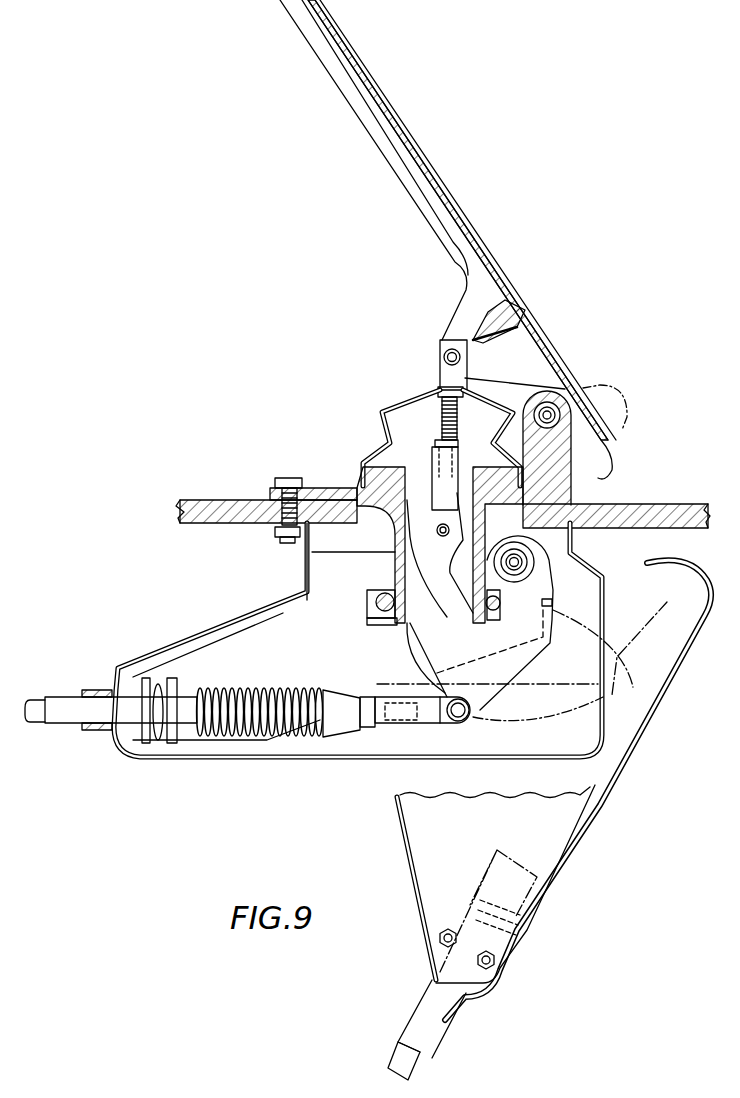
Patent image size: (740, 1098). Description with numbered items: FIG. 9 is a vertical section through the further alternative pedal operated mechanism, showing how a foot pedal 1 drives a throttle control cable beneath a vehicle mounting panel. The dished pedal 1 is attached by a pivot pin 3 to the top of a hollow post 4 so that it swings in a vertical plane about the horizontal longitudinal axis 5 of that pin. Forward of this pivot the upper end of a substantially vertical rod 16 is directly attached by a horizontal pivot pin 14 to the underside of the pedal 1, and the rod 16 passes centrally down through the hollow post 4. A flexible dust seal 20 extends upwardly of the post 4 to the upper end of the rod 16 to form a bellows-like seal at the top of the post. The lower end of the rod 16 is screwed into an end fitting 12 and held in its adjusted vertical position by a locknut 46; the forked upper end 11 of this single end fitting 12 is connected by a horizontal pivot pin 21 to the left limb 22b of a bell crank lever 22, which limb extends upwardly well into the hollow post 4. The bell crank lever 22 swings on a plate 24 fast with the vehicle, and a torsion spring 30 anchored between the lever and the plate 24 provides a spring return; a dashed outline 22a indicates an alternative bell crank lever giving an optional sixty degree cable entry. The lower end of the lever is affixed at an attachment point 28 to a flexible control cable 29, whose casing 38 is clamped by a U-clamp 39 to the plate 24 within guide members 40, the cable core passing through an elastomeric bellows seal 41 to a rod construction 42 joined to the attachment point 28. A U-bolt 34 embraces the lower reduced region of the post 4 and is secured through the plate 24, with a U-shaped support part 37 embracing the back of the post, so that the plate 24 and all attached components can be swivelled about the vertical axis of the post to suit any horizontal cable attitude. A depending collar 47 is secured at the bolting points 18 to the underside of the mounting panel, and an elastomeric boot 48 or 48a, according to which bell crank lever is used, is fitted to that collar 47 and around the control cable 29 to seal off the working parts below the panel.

The pedal 1 is at (453, 210).
The pivot pin 3 is at (577, 363).
The hollow post 4 is at (397, 533).
The horizontal longitudinal axis 5 is at (567, 423).
The forked upper end 11 is at (491, 545).
The end fitting 12 is at (458, 480).
The horizontal pivot pin 14 is at (444, 357).
The vertical rod 16 is at (440, 415).
The bolting points 18 is at (298, 458).
The flexible dust seal 20 is at (383, 403).
The horizontal pivot pin 21 is at (430, 512).
The bell crank lever 22 is at (560, 580).
The bell crank lever (dashed outline) 22a is at (610, 648).
The left limb 22b is at (432, 553).
The plate 24 is at (213, 653).
The point of attachment 28 is at (458, 722).
The flexible control cable 29 is at (34, 730).
The torsion spring 30 is at (552, 603).
The U-bolt 34 is at (387, 593).
The support part 37 is at (375, 620).
The casing 38 is at (70, 700).
The U-clamp 39 is at (158, 683).
The guide members 40 is at (172, 745).
The elastomeric bellows seal 41 is at (267, 690).
The rod construction 42 is at (390, 722).
The locknut 46 is at (436, 443).
The depending collar 47 is at (307, 543).
The elastomeric boot 48 is at (603, 608).
The elastomeric boot (alternative) 48a is at (640, 747).